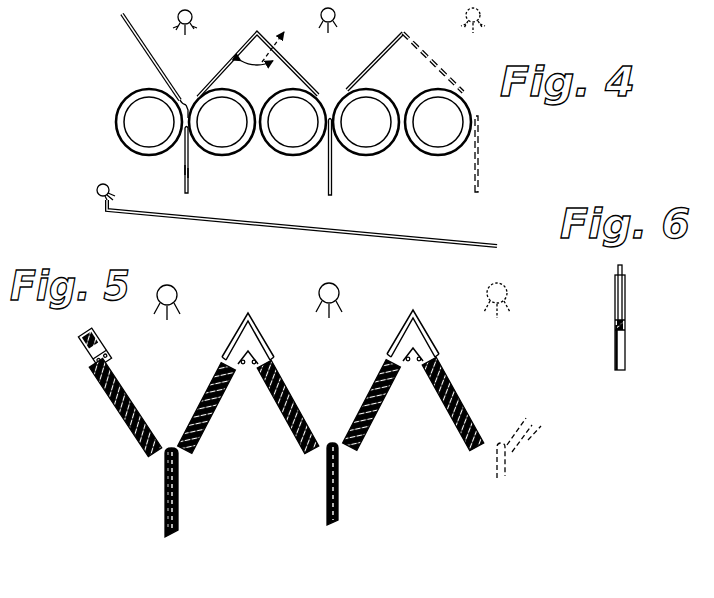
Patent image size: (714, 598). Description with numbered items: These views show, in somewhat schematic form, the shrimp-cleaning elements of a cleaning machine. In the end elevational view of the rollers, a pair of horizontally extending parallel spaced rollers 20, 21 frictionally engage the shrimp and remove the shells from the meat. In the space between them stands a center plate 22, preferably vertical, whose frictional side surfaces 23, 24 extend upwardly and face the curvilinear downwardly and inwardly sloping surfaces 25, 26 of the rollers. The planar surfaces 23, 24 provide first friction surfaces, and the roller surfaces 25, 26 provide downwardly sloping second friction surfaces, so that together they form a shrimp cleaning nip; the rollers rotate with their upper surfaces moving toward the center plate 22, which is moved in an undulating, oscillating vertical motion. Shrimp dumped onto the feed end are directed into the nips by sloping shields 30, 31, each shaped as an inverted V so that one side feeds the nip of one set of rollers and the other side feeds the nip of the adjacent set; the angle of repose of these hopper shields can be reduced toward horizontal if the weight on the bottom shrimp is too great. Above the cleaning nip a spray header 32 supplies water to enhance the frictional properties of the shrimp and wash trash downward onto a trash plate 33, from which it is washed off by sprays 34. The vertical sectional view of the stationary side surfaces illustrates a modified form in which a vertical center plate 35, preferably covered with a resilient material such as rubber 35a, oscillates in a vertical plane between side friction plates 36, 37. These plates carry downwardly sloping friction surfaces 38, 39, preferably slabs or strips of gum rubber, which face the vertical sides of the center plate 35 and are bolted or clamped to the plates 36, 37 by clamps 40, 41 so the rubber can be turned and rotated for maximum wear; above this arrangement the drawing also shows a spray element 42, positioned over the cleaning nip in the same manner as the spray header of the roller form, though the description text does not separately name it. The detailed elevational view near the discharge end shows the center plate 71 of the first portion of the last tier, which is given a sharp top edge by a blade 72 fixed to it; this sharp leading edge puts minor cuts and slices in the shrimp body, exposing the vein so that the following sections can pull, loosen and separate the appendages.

In FIG. 4, the roller 20 is at (169, 147).
In FIG. 4, the roller 21 is at (206, 151).
In FIG. 4, the center plate 22 is at (182, 189).
In FIG. 4, the frictional side surface 23 is at (184, 169).
In FIG. 4, the frictional side surface 24 is at (189, 173).
In FIG. 4, the roller surface 25 is at (179, 99).
In FIG. 4, the roller surface 26 is at (189, 107).
In FIG. 4, the sloping shield 30 is at (147, 51).
In FIG. 4, the sloping shield 31 is at (248, 42).
In FIG. 4, the spray header 32 is at (189, 13).
In FIG. 4, the trash plate 33 is at (207, 217).
In FIG. 4, the spray 34 is at (105, 184).
In FIG. 5, the center plate 35 is at (180, 503).
In FIG. 5, the rubber 35a is at (179, 474).
In FIG. 5, the side friction plate 36 is at (100, 389).
In FIG. 5, the side friction plate 37 is at (215, 413).
In FIG. 5, the friction surface 38 is at (119, 378).
In FIG. 5, the friction surface 39 is at (208, 392).
In FIG. 5, the clamp 40 is at (99, 336).
In FIG. 5, the clamp 41 is at (244, 319).
In FIG. 5, the light source 42 is at (175, 287).
In FIG. 6, the center plate 71 is at (623, 352).
In FIG. 6, the blade 72 is at (624, 270).